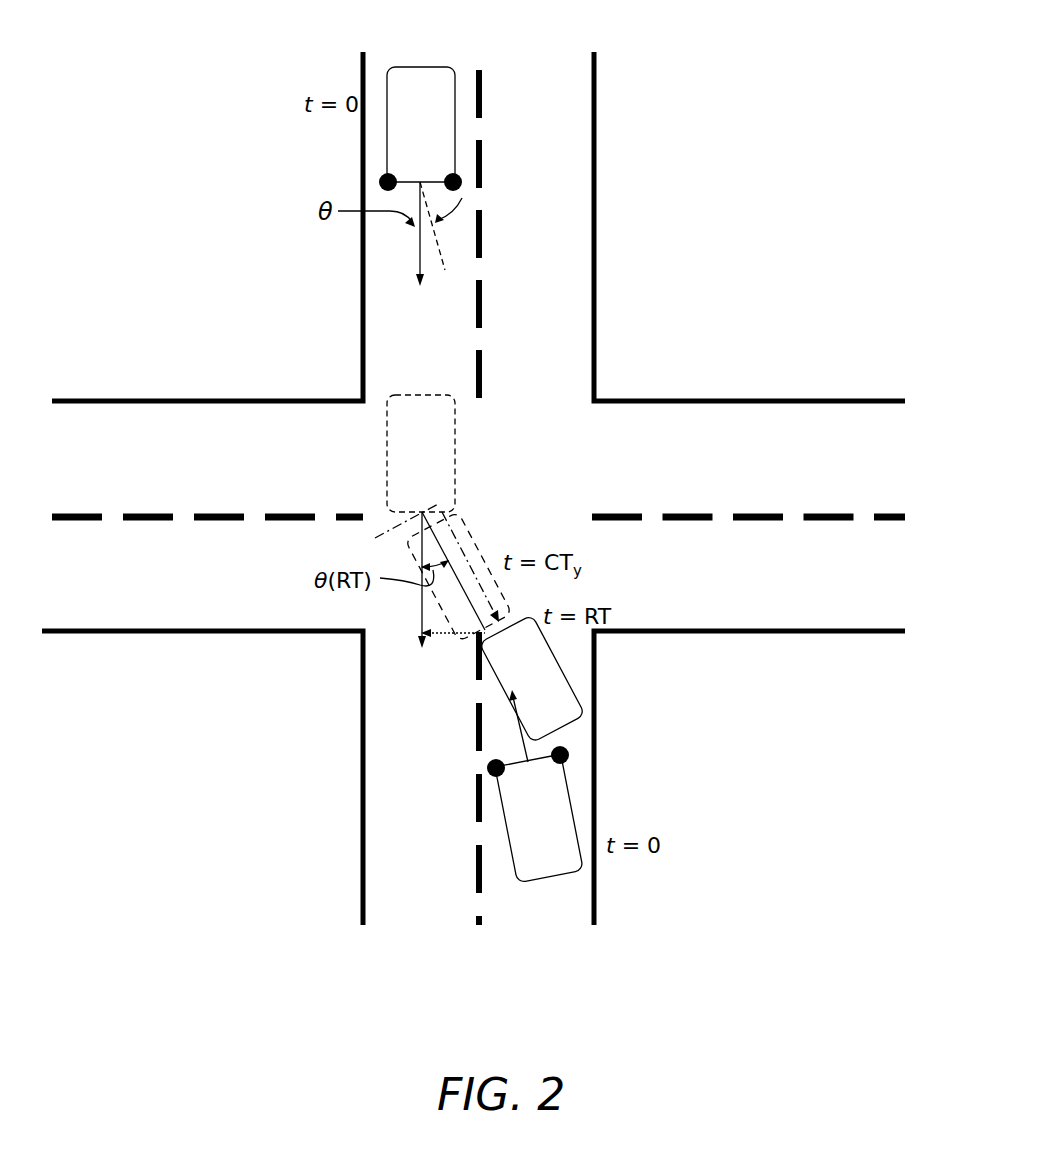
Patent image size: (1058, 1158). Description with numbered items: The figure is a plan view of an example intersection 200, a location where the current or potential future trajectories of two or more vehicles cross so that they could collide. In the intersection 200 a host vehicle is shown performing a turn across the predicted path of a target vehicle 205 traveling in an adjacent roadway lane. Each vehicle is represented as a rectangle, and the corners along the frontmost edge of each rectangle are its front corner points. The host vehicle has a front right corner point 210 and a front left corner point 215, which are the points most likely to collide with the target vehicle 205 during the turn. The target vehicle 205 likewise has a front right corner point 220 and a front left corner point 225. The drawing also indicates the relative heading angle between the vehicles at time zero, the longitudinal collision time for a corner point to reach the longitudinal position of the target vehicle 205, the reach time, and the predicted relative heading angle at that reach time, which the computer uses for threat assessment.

The intersection 200 is at (177, 74).
The target vehicle 205 is at (428, 66).
The front right corner point 210 is at (567, 755).
The front left corner point 215 is at (489, 765).
The front right corner point 220 is at (381, 178).
The front left corner point 225 is at (460, 188).